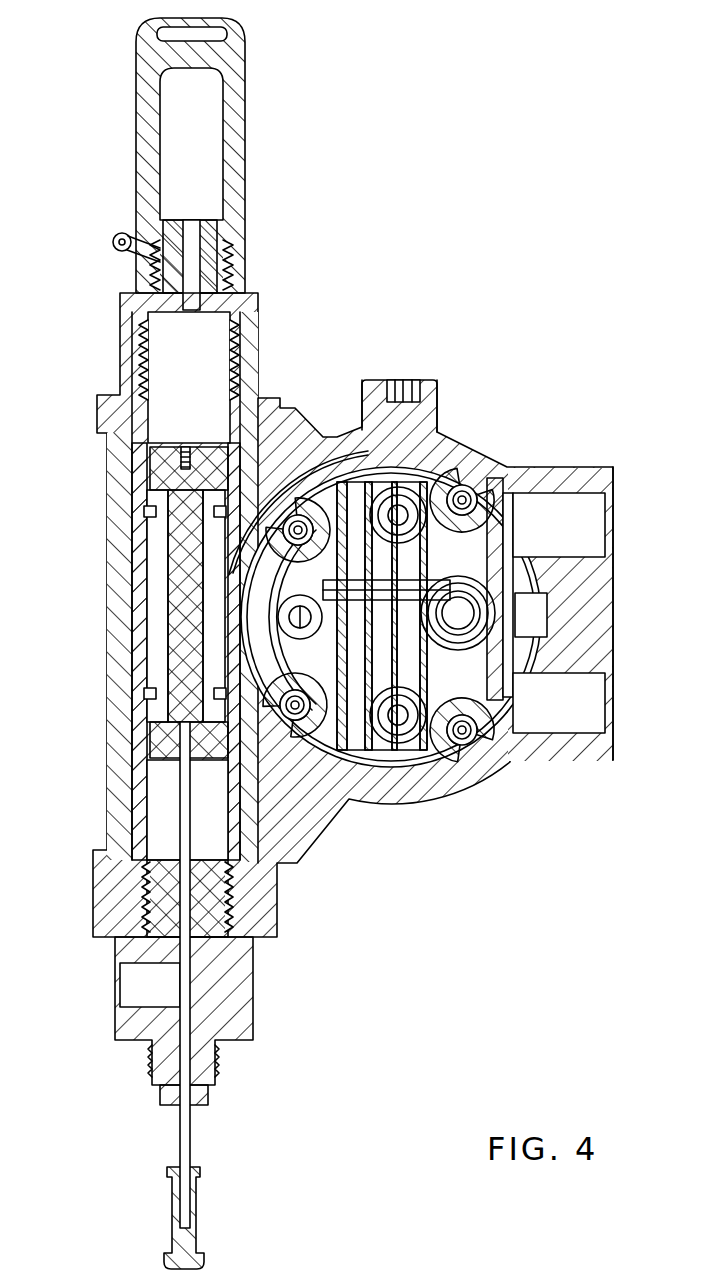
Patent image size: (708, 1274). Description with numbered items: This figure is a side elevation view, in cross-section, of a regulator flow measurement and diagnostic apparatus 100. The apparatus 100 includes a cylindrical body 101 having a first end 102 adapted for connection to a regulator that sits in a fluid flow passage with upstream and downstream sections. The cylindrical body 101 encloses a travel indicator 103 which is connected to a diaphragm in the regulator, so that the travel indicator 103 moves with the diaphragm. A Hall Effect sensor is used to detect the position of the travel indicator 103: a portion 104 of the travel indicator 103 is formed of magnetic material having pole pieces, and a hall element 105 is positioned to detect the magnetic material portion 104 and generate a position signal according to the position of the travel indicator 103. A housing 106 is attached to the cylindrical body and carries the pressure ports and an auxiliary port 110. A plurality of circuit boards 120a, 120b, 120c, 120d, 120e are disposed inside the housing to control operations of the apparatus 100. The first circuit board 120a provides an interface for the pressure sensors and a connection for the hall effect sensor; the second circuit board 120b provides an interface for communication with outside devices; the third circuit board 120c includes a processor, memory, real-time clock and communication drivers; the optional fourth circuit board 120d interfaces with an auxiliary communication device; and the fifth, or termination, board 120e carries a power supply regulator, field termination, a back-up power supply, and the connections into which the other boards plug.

The regulator flow measurement and diagnostic apparatus 100 is at (414, 356).
The cylindrical body 101 is at (108, 704).
The first end 102 is at (165, 1073).
The travel indicator 103 is at (180, 806).
The magnetic material portion 104 is at (167, 540).
The hall element 105 is at (270, 597).
The housing 106 is at (543, 755).
The auxiliary port 110 is at (440, 397).
The first circuit board 120a is at (330, 745).
The second circuit board 120b is at (360, 760).
The third circuit board 120c is at (478, 681).
The fourth circuit board 120d is at (470, 745).
The fifth circuit board 120e is at (468, 470).